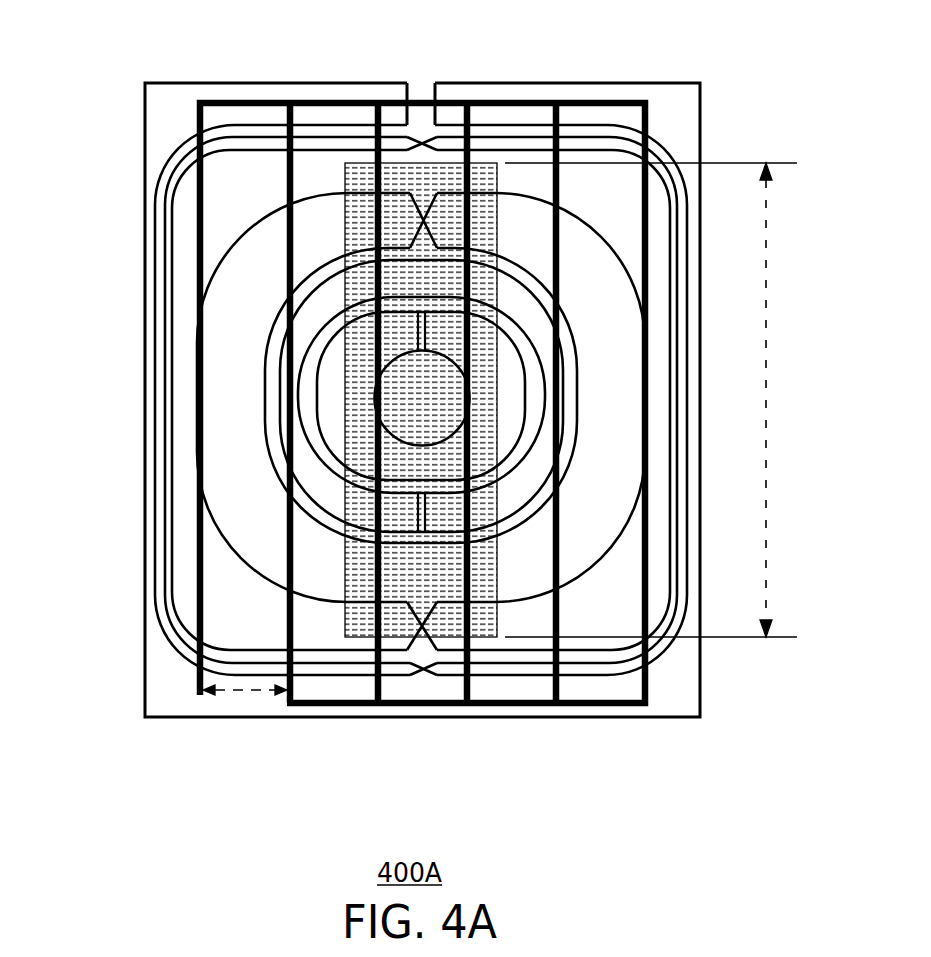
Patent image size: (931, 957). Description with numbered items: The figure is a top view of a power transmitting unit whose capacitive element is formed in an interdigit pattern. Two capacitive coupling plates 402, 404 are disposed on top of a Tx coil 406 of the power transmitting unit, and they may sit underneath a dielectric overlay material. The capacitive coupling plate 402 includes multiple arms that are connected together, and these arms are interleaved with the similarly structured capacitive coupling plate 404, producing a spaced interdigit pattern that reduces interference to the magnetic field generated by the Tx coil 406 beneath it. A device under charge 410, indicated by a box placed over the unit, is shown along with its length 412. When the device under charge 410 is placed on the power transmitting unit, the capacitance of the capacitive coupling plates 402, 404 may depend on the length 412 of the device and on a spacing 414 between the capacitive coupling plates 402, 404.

The capacitive coupling plate 402 is at (232, 100).
The capacitive coupling plate 404 is at (287, 170).
The Tx coil 406 is at (167, 343).
The device under charge 410 is at (357, 373).
The length 412 is at (765, 373).
The spacing 414 is at (240, 695).